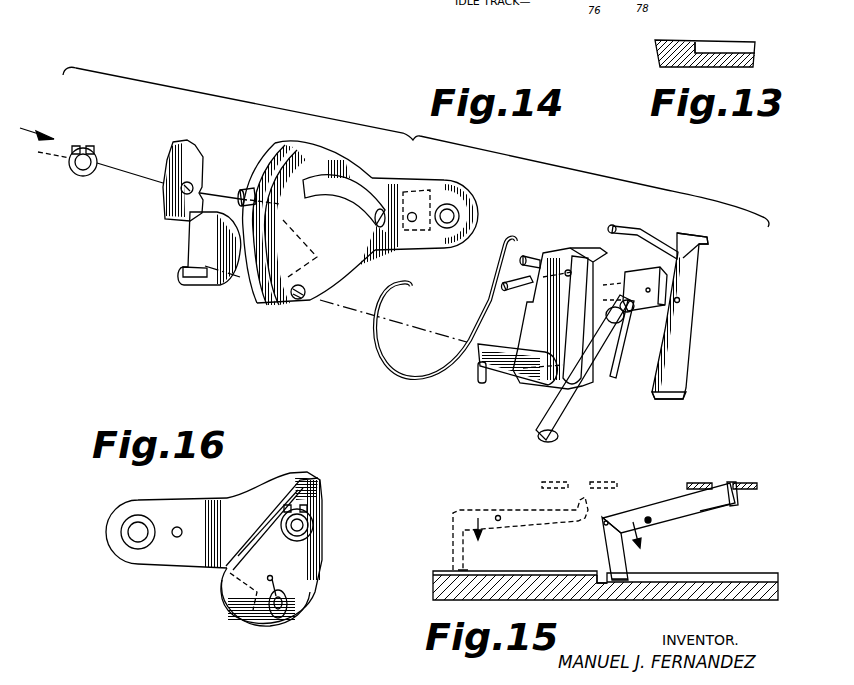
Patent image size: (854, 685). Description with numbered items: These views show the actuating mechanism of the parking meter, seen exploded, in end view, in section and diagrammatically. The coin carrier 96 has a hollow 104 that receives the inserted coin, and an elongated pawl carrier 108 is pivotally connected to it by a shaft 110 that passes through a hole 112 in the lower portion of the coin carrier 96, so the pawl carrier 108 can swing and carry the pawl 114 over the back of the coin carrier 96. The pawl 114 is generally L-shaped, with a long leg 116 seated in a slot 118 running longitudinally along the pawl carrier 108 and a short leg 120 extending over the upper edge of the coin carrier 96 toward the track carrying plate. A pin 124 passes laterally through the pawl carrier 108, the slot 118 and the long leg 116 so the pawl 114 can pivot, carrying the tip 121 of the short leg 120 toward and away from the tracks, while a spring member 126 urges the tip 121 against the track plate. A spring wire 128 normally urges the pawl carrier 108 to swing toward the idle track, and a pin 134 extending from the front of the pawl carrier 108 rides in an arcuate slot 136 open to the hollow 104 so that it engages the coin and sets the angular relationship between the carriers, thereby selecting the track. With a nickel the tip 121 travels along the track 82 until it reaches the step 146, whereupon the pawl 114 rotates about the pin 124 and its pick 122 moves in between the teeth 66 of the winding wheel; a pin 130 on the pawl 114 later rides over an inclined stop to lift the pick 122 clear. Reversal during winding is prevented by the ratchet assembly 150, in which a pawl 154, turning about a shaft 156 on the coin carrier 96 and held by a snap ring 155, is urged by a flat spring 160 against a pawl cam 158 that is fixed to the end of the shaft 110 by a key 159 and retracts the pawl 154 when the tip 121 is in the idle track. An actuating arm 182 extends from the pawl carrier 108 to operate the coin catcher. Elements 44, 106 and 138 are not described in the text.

In FIG. 14, the rod end 44 is at (563, 439).
In FIG. 15, the teeth 66 is at (697, 483).
In FIG. 13, the track 82 is at (745, 42).
In FIG. 15, the track 82 is at (517, 571).
In FIG. 14, the coin carrier 96 is at (350, 165).
In FIG. 16, the coin carrier 96 is at (236, 492).
In FIG. 14, the hollow 104 is at (317, 177).
In FIG. 14, the ratchet plate 106 is at (258, 299).
In FIG. 14, the pawl carrier 108 is at (562, 252).
In FIG. 14, the shaft 110 is at (513, 368).
In FIG. 16, the shaft 110 is at (272, 613).
In FIG. 14, the hole 112 is at (299, 300).
In FIG. 14, the pawl 114 is at (688, 346).
In FIG. 15, the pawl 114 is at (520, 508).
In FIG. 14, the long leg 116 is at (692, 300).
In FIG. 15, the long leg 116 is at (706, 511).
In FIG. 14, the slot 118 is at (574, 338).
In FIG. 14, the short leg 120 is at (658, 235).
In FIG. 15, the short leg 120 is at (605, 541).
In FIG. 14, the tip 121 is at (617, 225).
In FIG. 15, the tip 121 is at (470, 570).
In FIG. 14, the pick 122 is at (684, 397).
In FIG. 15, the pick 122 is at (733, 482).
In FIG. 14, the pin 124 is at (511, 291).
In FIG. 15, the pin 124 is at (498, 516).
In FIG. 14, the spring member 126 is at (612, 379).
In FIG. 14, the spring wire 128 is at (428, 370).
In FIG. 14, the pin 130 is at (707, 238).
In FIG. 14, the pin 134 is at (530, 257).
In FIG. 14, the arcuate slot 136 is at (368, 212).
In FIG. 14, the lug 138 is at (618, 330).
In FIG. 13, the step 146 is at (700, 42).
In FIG. 15, the step 146 is at (598, 600).
In FIG. 16, the ratchet assembly 150 is at (230, 622).
In FIG. 14, the pawl 154 is at (163, 190).
In FIG. 16, the pawl 154 is at (318, 480).
In FIG. 14, the snap ring 155 is at (97, 159).
In FIG. 16, the snap ring 155 is at (300, 526).
In FIG. 14, the shaft 156 is at (261, 195).
In FIG. 16, the shaft 156 is at (312, 531).
In FIG. 14, the pawl cam 158 is at (215, 281).
In FIG. 16, the pawl cam 158 is at (232, 598).
In FIG. 14, the key 159 is at (482, 385).
In FIG. 16, the key 159 is at (273, 578).
In FIG. 14, the flat spring 160 is at (296, 226).
In FIG. 16, the flat spring 160 is at (243, 540).
In FIG. 14, the actuating arm 182 is at (572, 413).